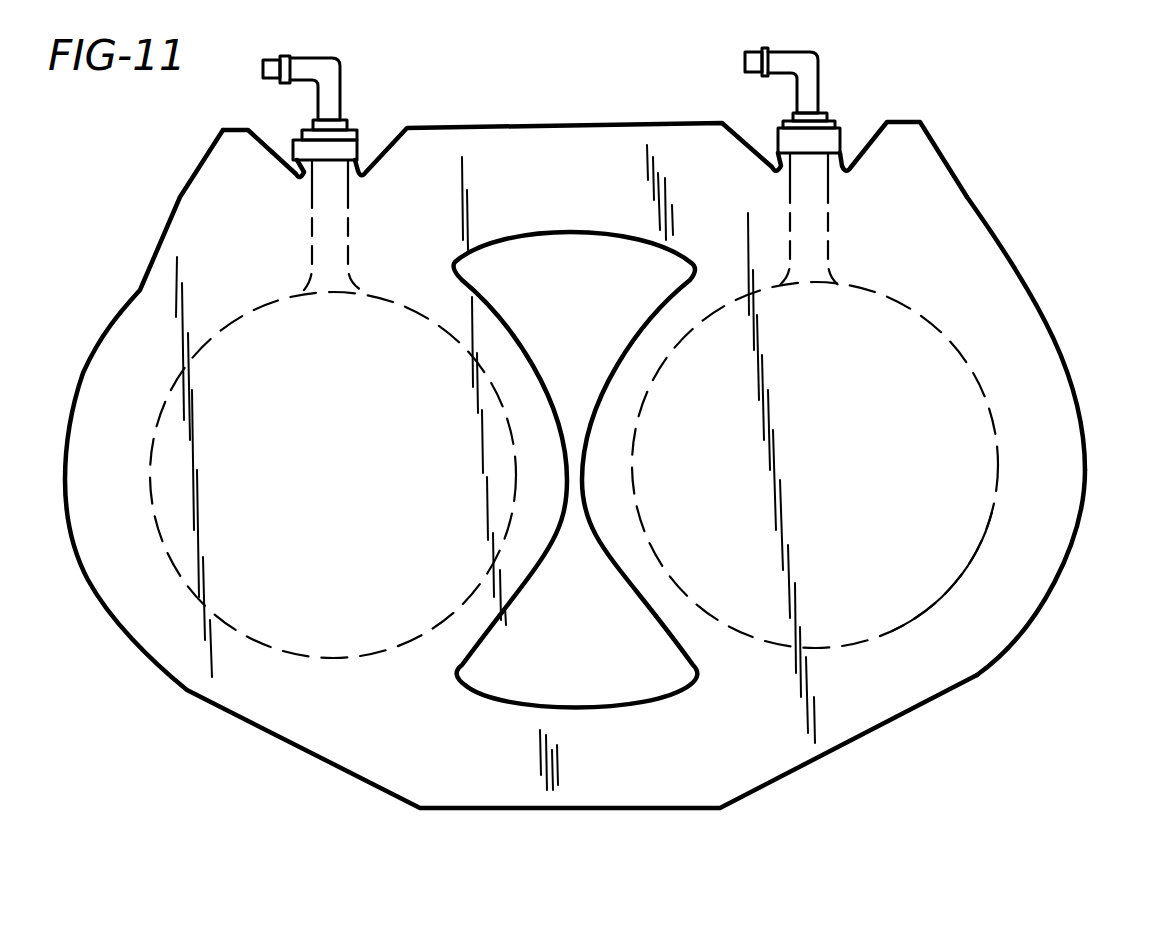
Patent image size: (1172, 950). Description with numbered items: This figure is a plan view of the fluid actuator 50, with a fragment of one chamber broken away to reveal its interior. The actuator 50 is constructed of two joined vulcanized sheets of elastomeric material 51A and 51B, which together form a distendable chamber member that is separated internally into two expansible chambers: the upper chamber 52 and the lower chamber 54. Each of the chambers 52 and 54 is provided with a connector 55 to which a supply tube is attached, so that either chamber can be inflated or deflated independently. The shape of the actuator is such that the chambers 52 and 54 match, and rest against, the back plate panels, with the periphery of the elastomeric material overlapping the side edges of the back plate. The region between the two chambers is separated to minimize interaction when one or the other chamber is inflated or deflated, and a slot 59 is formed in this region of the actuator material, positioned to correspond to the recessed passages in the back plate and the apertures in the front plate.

The fluid actuator 50 is at (623, 810).
The sheet of elastomeric material 51A is at (1022, 393).
The sheet of elastomeric material 51B is at (968, 632).
The upper chamber 52 is at (943, 533).
The lower chamber 54 is at (267, 647).
The connector 55 is at (294, 148).
The slot 59 is at (540, 705).